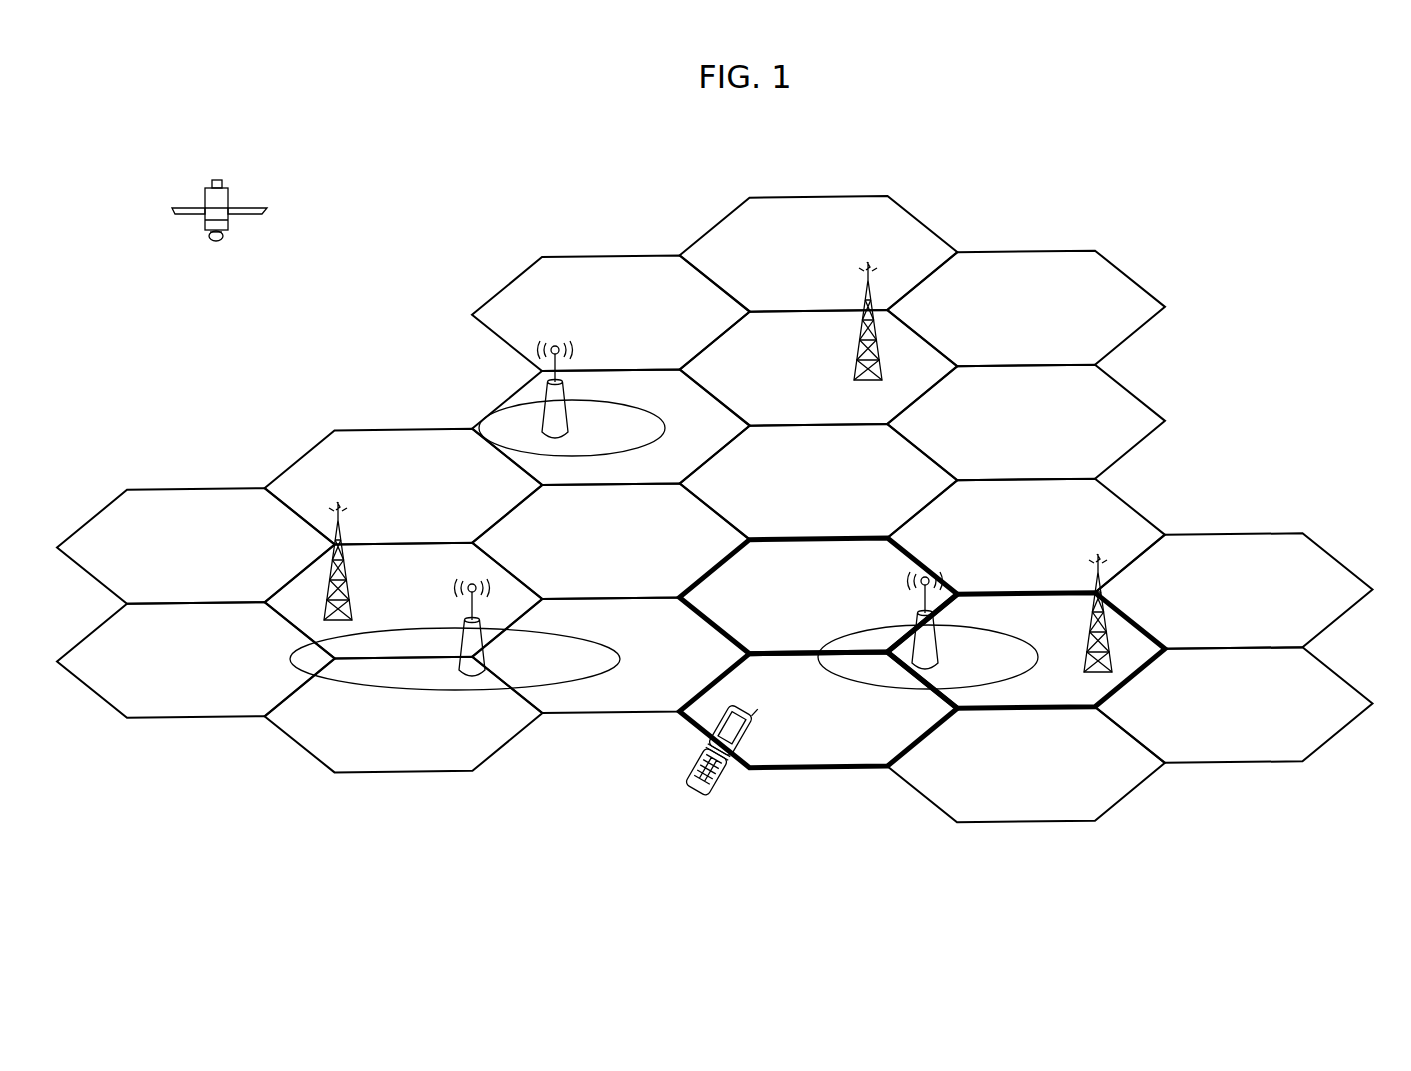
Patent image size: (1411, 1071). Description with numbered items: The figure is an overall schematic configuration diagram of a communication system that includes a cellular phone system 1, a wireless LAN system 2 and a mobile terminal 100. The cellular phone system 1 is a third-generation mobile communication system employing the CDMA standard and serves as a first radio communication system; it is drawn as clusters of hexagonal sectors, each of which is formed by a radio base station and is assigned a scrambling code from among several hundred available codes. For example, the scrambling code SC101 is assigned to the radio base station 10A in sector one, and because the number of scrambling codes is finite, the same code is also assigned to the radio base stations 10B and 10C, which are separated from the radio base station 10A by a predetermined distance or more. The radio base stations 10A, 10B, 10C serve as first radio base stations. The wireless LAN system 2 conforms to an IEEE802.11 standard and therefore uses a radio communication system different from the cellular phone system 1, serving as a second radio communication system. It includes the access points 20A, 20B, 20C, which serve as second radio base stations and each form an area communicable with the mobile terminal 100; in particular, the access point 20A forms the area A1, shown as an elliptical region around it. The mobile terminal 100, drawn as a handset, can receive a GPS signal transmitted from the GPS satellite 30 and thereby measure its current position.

The cellular phone system 1 is at (1130, 273).
The wireless LAN system 2 is at (1062, 679).
The radio base station 10A is at (1103, 627).
The radio base station 10B is at (878, 343).
The radio base station 10C is at (327, 580).
The access point 20A is at (940, 622).
The access point 20B is at (543, 388).
The access point 20C is at (470, 675).
The GPS satellite 30 is at (227, 187).
The mobile terminal 100 is at (710, 790).
The area A1 is at (900, 697).